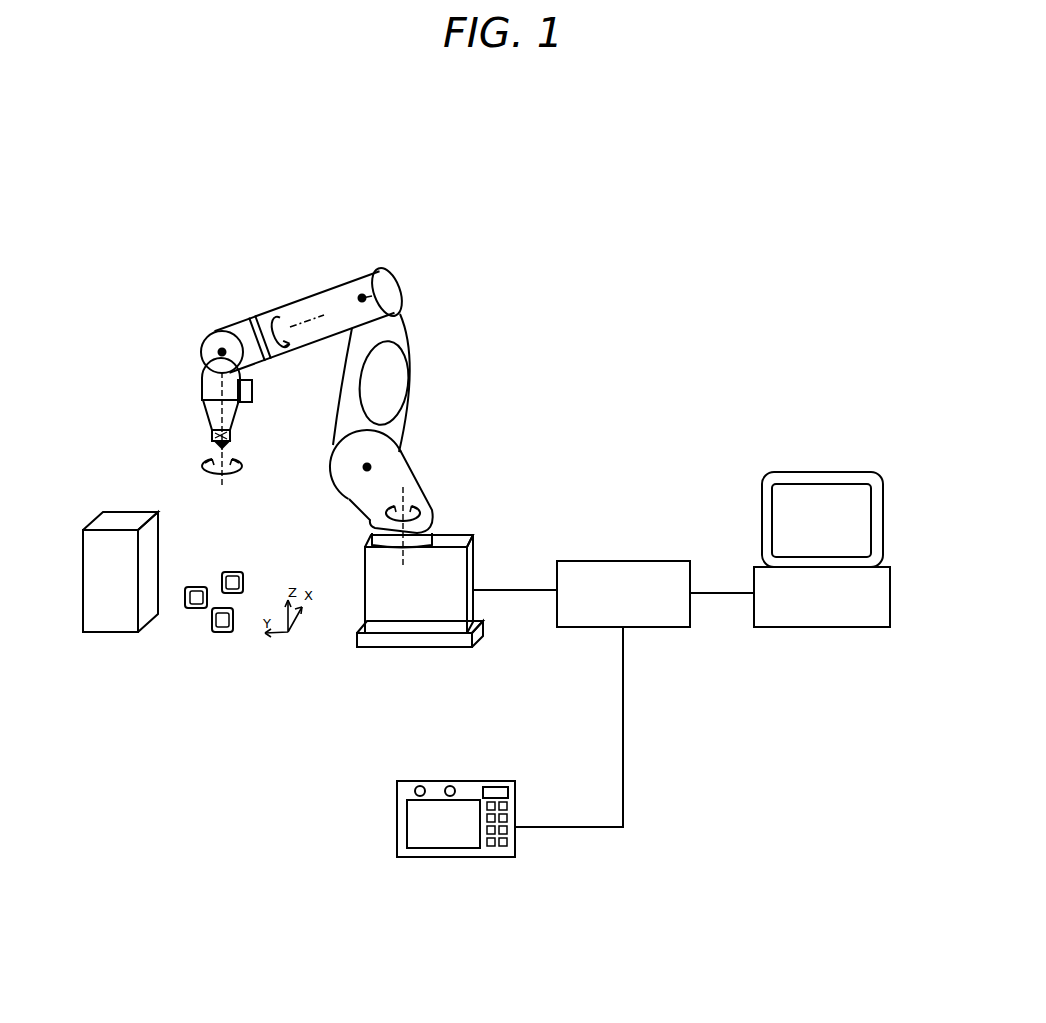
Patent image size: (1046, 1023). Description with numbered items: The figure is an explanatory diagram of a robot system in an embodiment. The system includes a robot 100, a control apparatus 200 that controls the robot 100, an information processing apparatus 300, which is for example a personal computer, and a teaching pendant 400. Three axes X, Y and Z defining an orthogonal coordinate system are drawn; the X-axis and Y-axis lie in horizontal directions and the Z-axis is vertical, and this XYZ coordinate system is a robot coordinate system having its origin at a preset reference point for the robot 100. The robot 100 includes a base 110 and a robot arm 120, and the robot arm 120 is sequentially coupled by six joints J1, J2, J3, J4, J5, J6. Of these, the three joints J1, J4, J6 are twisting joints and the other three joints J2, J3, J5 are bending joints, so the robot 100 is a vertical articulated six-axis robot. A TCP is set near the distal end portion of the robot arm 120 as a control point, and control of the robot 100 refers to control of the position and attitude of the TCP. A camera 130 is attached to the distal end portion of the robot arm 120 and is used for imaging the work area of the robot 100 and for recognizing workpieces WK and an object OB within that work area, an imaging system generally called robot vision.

The robot 100 is at (470, 213).
The base 110 is at (468, 552).
The robot arm 120 is at (410, 392).
The camera 130 is at (254, 391).
The control apparatus 200 is at (590, 561).
The information processing apparatus 300 is at (838, 472).
The teaching pendant 400 is at (438, 781).
The joint J1 is at (432, 492).
The joint J2 is at (370, 467).
The joint J3 is at (398, 292).
The joint J4 is at (298, 318).
The joint J5 is at (218, 345).
The joint J6 is at (210, 392).
The tool center point TCP is at (217, 448).
The object OB is at (117, 620).
The workpieces WK is at (193, 608).